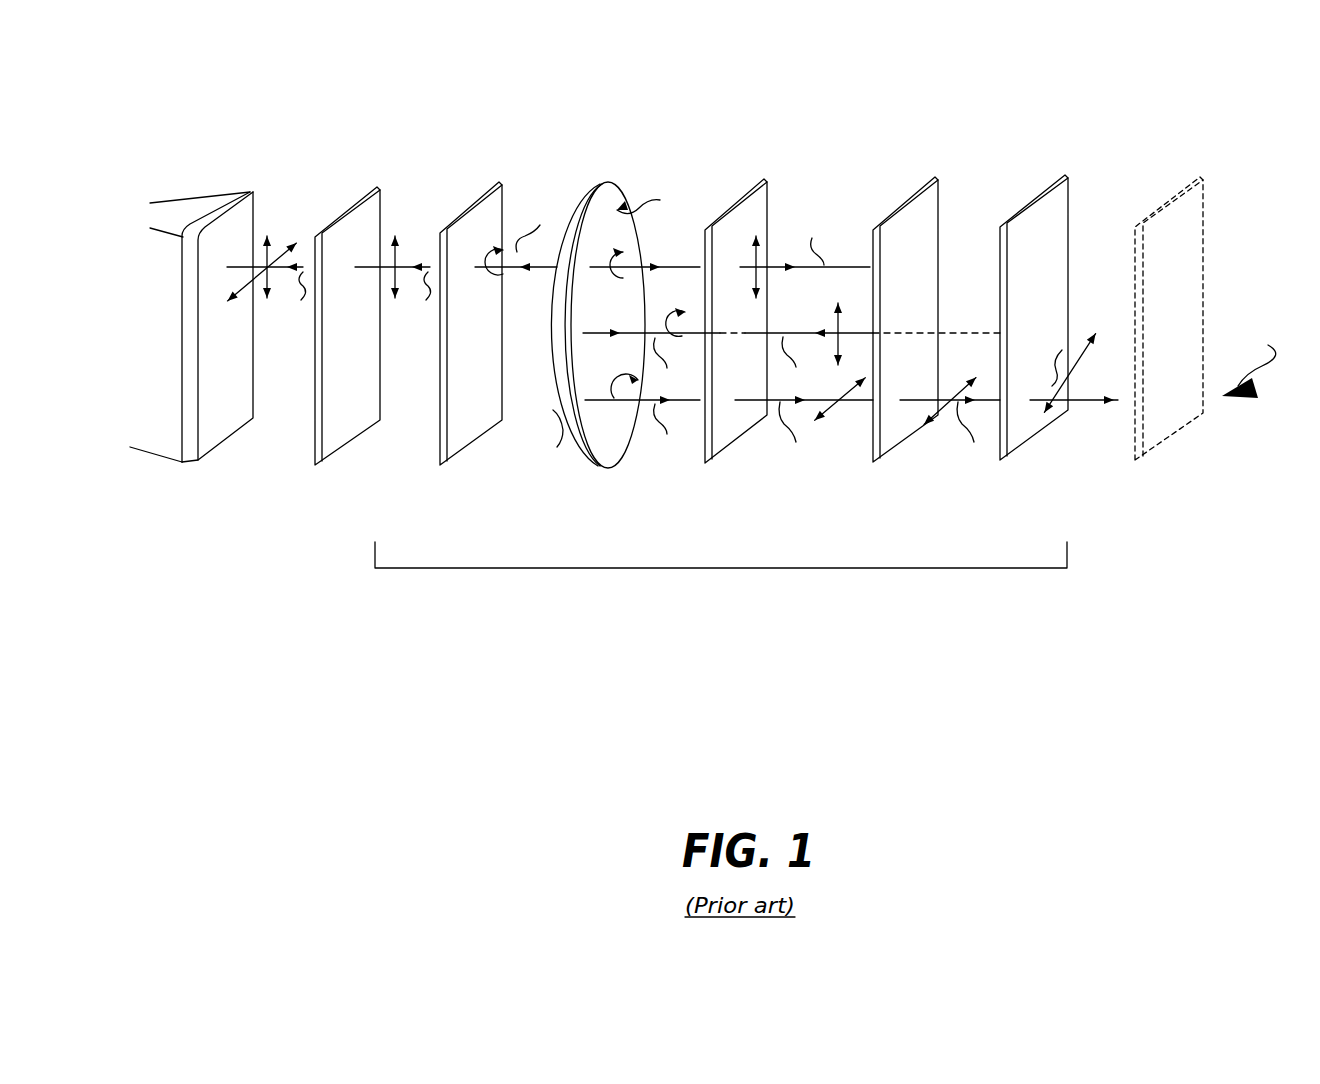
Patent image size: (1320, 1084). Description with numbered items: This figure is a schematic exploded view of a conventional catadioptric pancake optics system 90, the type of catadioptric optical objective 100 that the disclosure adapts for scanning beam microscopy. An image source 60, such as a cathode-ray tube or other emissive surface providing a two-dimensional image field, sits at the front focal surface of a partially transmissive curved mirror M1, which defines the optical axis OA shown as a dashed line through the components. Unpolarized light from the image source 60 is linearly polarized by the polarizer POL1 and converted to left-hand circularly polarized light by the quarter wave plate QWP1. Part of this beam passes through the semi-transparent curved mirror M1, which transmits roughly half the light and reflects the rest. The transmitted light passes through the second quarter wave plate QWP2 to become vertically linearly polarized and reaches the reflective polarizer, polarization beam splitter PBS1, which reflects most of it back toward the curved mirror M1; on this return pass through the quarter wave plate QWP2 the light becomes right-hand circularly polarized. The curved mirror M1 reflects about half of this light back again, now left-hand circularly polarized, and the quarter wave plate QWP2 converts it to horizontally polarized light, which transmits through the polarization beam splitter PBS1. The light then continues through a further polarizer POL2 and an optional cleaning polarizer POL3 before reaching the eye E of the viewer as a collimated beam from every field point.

The image source 60 is at (208, 430).
The pancake optics system 90 is at (634, 99).
The catadioptric optical objective 100 is at (658, 568).
The polarizer POL1 is at (338, 432).
The quarter wave plate QWP1 is at (473, 432).
The curved mirror M1 is at (612, 450).
The quarter wave plate QWP2 is at (730, 432).
The polarization beam splitter PBS1 is at (900, 432).
The second linear polarizer POL2 is at (1022, 430).
The cleaning polarizer POL3 is at (1170, 203).
The optical axis OA is at (958, 333).
The eye E is at (1249, 354).